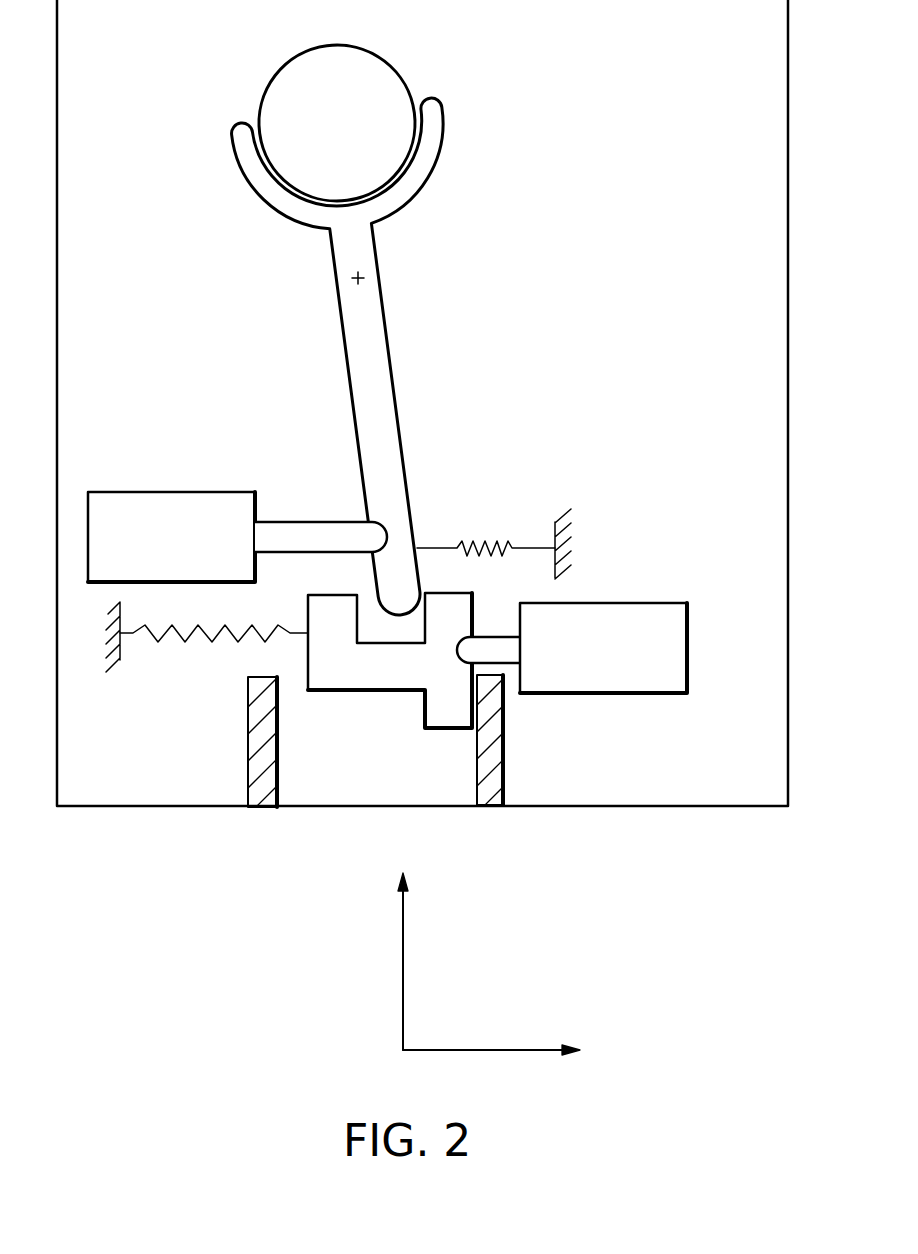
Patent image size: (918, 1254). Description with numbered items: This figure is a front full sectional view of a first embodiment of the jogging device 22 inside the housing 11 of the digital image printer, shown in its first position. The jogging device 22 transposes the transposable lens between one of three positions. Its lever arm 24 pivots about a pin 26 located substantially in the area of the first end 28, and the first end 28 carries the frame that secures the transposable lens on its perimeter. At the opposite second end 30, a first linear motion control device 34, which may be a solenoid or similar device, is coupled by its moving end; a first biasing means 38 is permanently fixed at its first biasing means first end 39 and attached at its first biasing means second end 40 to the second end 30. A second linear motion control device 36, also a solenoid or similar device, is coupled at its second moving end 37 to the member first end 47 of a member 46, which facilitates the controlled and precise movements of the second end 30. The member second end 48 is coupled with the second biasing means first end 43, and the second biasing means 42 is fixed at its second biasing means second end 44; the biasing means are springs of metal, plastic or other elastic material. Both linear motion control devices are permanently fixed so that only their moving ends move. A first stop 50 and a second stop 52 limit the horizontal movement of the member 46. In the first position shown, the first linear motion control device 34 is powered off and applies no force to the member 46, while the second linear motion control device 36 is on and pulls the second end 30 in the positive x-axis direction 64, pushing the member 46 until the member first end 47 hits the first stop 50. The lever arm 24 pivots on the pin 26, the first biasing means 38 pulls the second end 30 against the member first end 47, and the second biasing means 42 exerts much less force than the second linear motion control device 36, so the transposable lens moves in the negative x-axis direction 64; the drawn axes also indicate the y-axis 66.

The housing 11 is at (788, 226).
The jogging device 22 is at (172, 200).
The lever arm 24 is at (395, 392).
The pin 26 is at (362, 274).
The first end 28 is at (336, 265).
The second end 30 is at (402, 601).
The first linear motion control device 34 is at (173, 497).
The second linear motion control device 36 is at (603, 612).
The second moving end 37 is at (477, 648).
The first biasing means 38 is at (478, 543).
The first biasing means first end 39 is at (541, 543).
The first biasing means second end 40 is at (437, 548).
The second biasing means 42 is at (211, 641).
The second biasing means first end 43 is at (297, 632).
The second biasing means second end 44 is at (130, 631).
The member 46 is at (372, 690).
The member first end 47 is at (460, 616).
The member second end 48 is at (325, 667).
The first stop 50 is at (494, 763).
The second stop 52 is at (254, 759).
The x-axis direction 64 is at (488, 1050).
The y-axis 66 is at (403, 957).